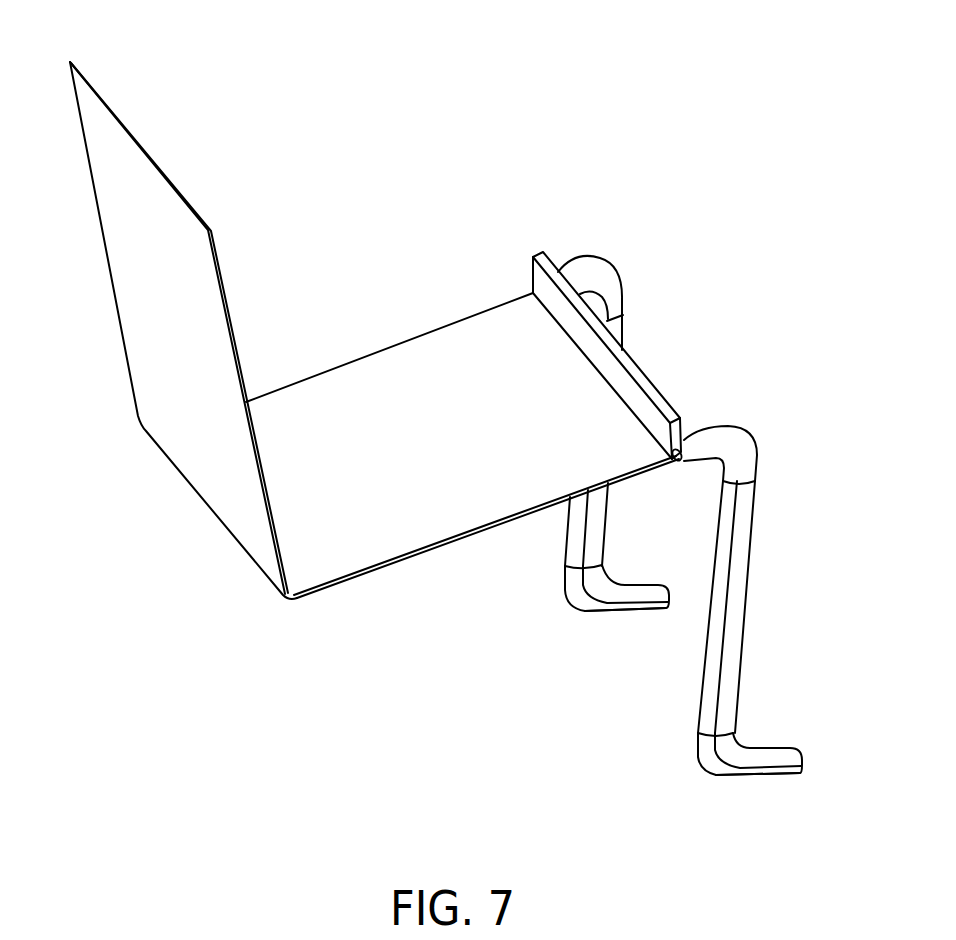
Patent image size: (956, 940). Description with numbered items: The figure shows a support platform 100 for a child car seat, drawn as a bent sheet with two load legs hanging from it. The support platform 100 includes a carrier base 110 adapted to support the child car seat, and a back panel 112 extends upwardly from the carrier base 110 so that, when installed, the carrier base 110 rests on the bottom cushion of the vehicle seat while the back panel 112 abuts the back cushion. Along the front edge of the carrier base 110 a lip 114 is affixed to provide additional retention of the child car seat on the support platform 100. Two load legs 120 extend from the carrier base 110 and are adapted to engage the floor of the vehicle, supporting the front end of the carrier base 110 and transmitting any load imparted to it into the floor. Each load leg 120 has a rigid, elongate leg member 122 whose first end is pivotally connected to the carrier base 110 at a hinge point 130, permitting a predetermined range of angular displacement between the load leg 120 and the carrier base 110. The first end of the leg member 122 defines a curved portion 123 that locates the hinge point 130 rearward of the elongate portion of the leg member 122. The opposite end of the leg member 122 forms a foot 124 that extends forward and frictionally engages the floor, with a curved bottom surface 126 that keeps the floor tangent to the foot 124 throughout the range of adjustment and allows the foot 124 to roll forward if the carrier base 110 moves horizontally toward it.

The support platform 100 is at (353, 60).
The carrier base 110 is at (390, 372).
The back panel 112 is at (121, 240).
The lip 114 is at (533, 257).
The load leg 120 is at (660, 538).
The leg member 122 is at (571, 539).
The curved portion 123 is at (609, 259).
The foot 124 is at (622, 586).
The curved bottom surface 126 is at (607, 614).
The hinge point 130 is at (689, 447).